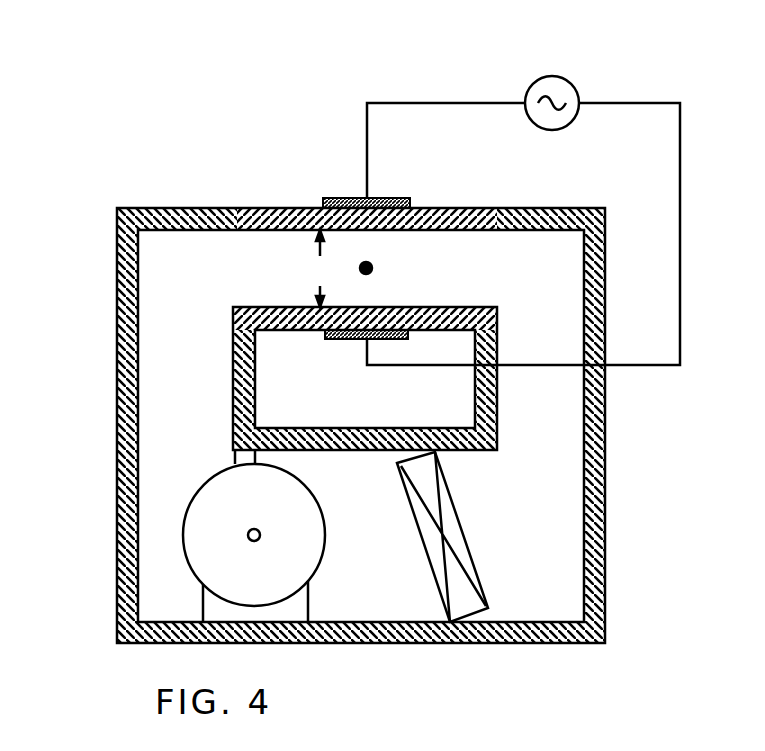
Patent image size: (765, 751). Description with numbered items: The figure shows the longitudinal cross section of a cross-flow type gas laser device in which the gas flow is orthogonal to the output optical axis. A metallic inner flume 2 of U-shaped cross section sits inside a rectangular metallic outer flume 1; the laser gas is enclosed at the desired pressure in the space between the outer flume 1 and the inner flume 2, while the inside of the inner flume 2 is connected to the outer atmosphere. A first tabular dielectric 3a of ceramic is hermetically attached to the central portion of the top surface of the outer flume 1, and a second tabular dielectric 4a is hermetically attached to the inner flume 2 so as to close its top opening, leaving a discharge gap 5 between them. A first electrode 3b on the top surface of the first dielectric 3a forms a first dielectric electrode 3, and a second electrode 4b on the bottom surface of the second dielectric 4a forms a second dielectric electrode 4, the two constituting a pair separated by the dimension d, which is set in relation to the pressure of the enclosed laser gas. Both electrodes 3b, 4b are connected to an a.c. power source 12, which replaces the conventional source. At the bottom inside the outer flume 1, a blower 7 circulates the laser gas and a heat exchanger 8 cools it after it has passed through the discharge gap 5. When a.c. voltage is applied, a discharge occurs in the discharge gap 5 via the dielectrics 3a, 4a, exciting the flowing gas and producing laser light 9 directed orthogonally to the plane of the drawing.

The outer flume 1 is at (314, 398).
The inner flume 2 is at (396, 388).
The first dielectric electrode 3 is at (362, 156).
The first tabular dielectric 3a is at (275, 207).
The first electrode 3b is at (395, 197).
The second dielectric electrode 4 is at (365, 373).
The second tabular dielectric 4a is at (295, 339).
The second electrode 4b is at (340, 346).
The discharge gap 5 is at (433, 262).
The blower 7 is at (322, 568).
The heat exchanger 8 is at (438, 597).
The laser light 9 is at (371, 276).
The a.c. power source 12 is at (536, 84).
The dimension between the first and second dielectric electrodes d is at (319, 268).